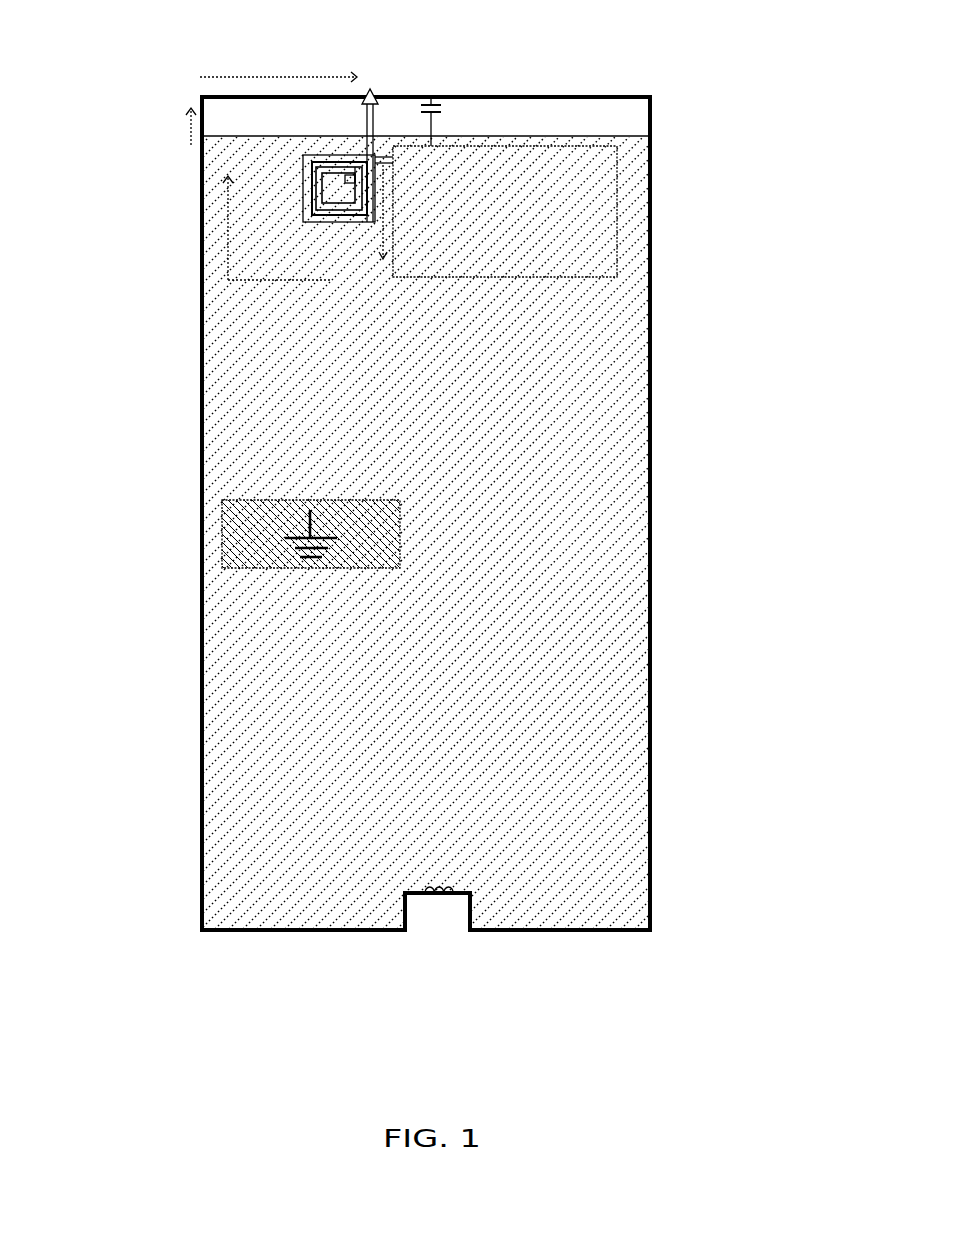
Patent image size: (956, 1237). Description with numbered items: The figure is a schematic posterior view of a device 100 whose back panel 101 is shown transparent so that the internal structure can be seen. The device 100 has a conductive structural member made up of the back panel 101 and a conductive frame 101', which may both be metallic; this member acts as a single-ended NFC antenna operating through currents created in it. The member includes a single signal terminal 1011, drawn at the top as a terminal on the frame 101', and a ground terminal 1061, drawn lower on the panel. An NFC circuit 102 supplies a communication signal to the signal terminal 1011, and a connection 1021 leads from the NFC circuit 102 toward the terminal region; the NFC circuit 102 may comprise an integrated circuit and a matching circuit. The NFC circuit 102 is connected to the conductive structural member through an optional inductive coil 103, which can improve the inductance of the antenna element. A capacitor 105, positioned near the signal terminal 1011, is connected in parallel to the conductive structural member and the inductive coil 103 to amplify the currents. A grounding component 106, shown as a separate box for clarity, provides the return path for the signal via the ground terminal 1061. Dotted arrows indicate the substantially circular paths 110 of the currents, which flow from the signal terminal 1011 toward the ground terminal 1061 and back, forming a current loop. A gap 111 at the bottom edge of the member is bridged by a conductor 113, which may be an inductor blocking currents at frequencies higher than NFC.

The device 100 is at (702, 106).
The back panel 101 is at (370, 513).
The conductive frame 101' is at (426, 56).
The signal terminal 1011 is at (371, 90).
The NFC circuit 102 is at (505, 211).
The connection to circuit block 1021 is at (393, 160).
The inductive coil 103 is at (348, 222).
The capacitor 105 is at (443, 114).
The grounding component 106 is at (336, 534).
The ground terminal 1061 is at (238, 543).
The circular paths 110 is at (227, 260).
The gap 111 is at (440, 940).
The inductor 113 is at (441, 866).